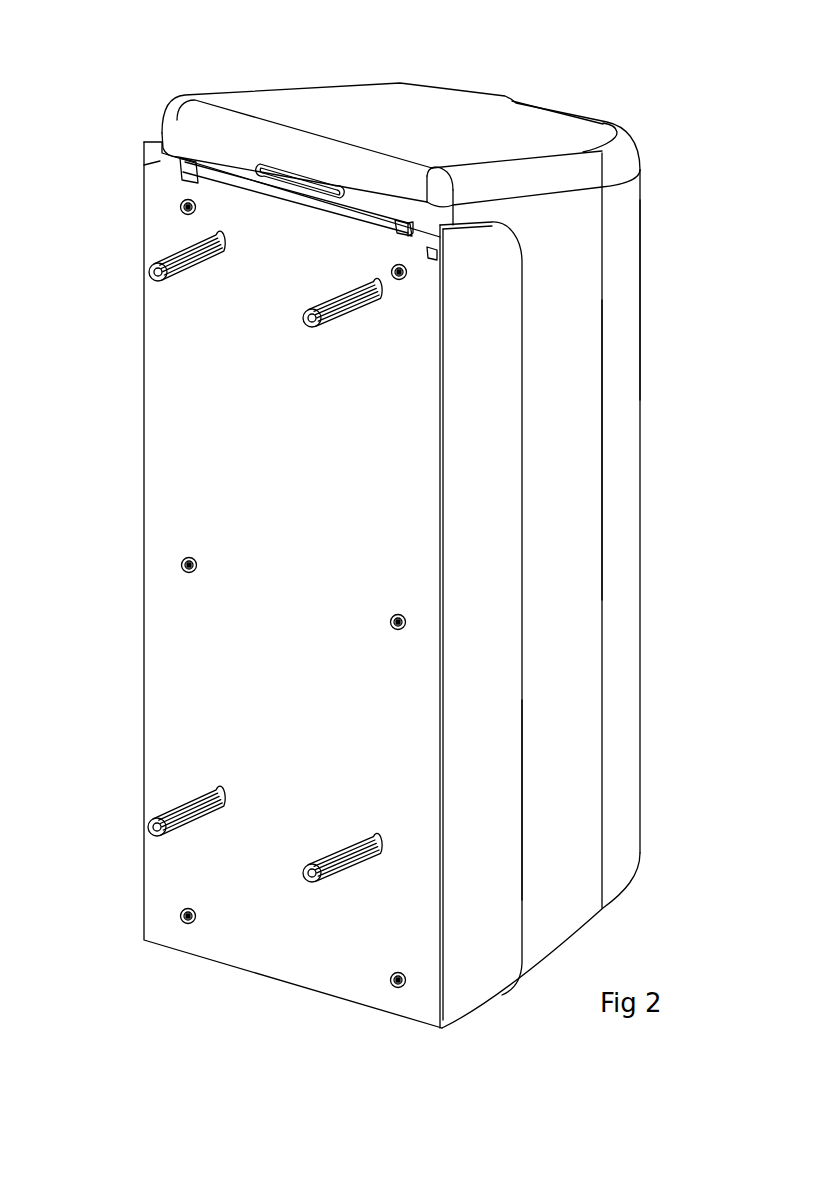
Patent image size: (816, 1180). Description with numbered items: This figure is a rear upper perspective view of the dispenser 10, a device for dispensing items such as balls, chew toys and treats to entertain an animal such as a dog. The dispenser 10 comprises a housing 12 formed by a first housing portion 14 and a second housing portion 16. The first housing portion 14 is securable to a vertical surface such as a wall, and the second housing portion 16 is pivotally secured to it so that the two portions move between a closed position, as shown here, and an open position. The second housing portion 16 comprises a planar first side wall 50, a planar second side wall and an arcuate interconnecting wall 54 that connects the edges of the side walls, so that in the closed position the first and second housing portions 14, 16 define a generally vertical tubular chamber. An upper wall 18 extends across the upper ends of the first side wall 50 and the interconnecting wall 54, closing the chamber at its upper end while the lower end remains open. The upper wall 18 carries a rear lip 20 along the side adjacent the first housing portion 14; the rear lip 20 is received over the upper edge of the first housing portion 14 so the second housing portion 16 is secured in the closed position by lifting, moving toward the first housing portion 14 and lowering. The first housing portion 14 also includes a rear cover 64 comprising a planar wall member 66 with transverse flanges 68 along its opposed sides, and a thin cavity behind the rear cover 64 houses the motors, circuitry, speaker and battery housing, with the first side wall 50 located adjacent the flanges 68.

The dispenser 10 is at (112, 126).
The housing 12 is at (620, 665).
The first housing portion 14 is at (130, 402).
The second housing portion 16 is at (628, 462).
The upper wall 18 is at (440, 108).
The rear lip 20 is at (215, 150).
The first side wall 50 is at (570, 762).
The interconnecting wall 54 is at (630, 312).
The rear cover 64 is at (275, 722).
The planar wall member 66 is at (232, 453).
The transverse flanges 68 is at (488, 715).